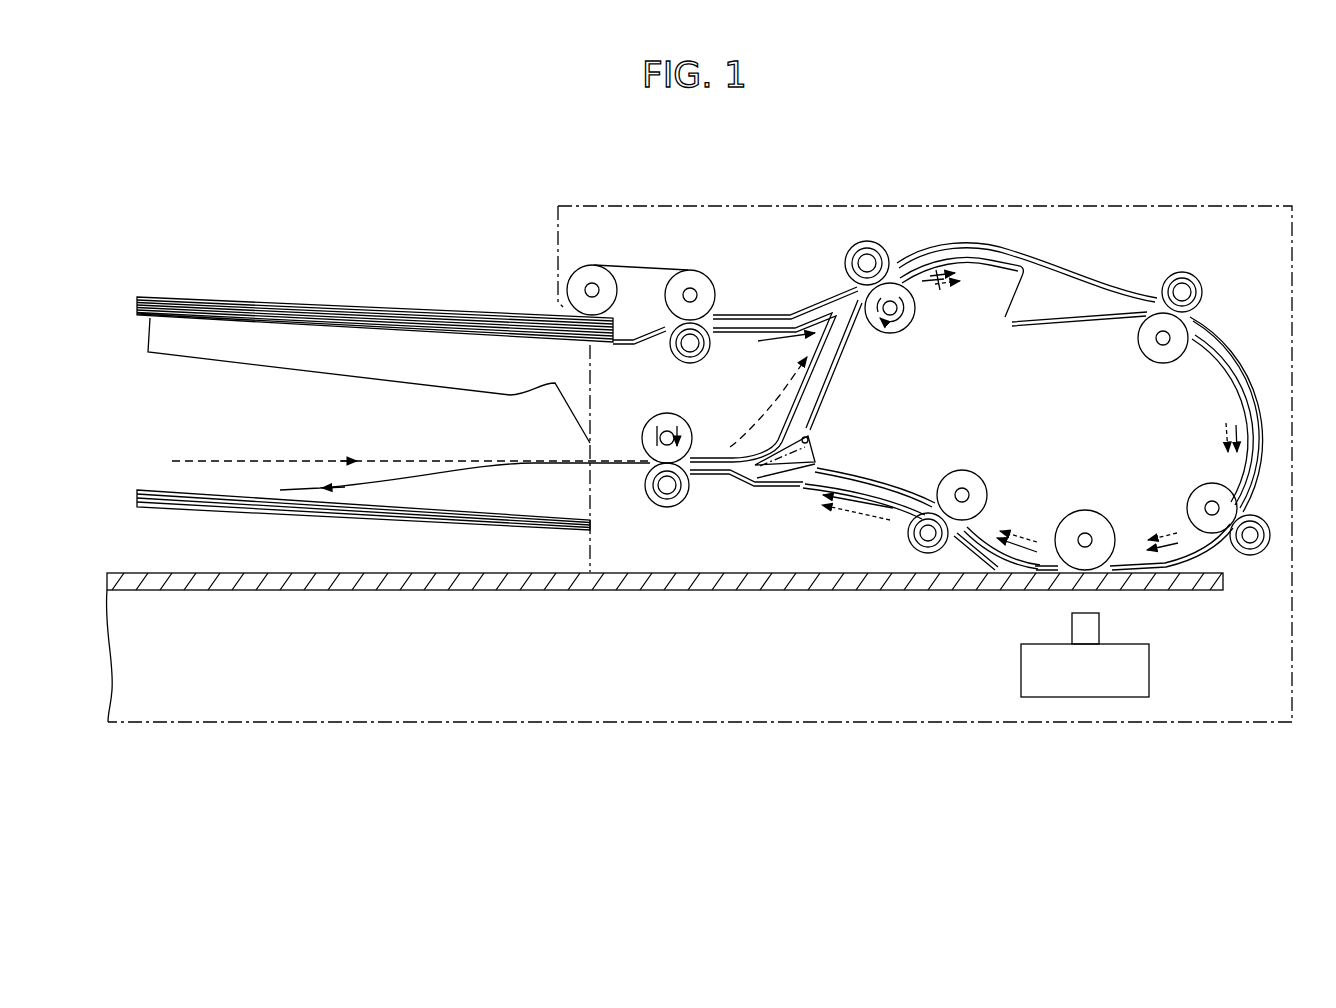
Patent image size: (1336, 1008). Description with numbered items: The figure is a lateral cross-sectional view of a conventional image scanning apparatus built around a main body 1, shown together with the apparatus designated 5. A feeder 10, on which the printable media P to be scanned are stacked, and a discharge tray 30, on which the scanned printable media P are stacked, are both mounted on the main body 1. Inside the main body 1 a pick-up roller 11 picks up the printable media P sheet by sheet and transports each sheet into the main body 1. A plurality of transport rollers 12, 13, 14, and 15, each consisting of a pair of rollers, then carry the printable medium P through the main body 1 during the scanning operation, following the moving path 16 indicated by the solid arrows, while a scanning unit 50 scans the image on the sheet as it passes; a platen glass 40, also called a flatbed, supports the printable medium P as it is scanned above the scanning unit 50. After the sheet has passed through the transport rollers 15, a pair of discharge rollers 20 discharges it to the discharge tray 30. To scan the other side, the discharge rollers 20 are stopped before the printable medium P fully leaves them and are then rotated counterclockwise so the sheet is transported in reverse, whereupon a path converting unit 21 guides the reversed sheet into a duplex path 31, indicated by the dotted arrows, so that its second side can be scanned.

The main body 1 is at (1081, 205).
The main body 5 is at (683, 765).
The printable media P is at (373, 300).
The feeder 10 is at (262, 357).
The pick-up roller 11 is at (594, 278).
The transport roller 12 is at (849, 255).
The transport roller 13 is at (1193, 280).
The transport roller 14 is at (1262, 553).
The transport roller 15 is at (963, 478).
The moving path 16 is at (930, 280).
The pair of discharge rollers 20 is at (664, 413).
The path converting unit 21 is at (806, 453).
The discharge tray 30 is at (275, 510).
The duplex path 31 is at (787, 398).
The platen glass 40 is at (778, 592).
The scanning unit 50 is at (1143, 665).